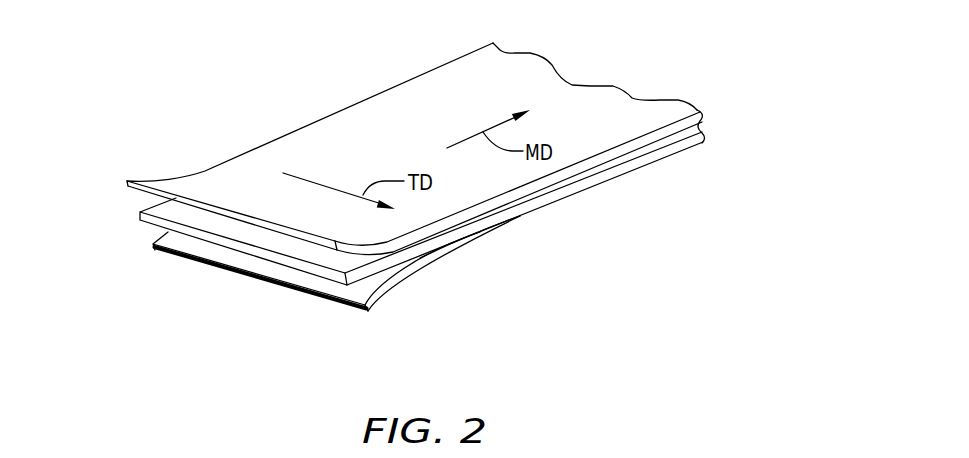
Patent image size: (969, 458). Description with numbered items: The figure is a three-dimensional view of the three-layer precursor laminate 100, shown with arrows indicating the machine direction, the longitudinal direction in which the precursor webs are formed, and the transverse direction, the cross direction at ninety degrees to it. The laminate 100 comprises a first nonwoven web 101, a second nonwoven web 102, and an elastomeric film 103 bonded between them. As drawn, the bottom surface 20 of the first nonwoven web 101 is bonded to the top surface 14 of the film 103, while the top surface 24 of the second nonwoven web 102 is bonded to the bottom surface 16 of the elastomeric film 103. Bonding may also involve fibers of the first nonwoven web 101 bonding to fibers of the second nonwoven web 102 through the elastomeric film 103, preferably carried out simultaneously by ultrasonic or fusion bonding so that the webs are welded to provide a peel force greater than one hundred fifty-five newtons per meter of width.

The deadened lane laminate 100 is at (595, 53).
The first nonwoven web 101 is at (127, 181).
The bottom surface of first nonwoven web 20 is at (140, 217).
The top surface of second nonwoven web 24 is at (182, 252).
The second nonwoven web 102 is at (250, 283).
The elastomeric film 103 is at (393, 265).
The top surface of film 14 is at (334, 267).
The bottom surface of elastomeric film 16 is at (364, 270).